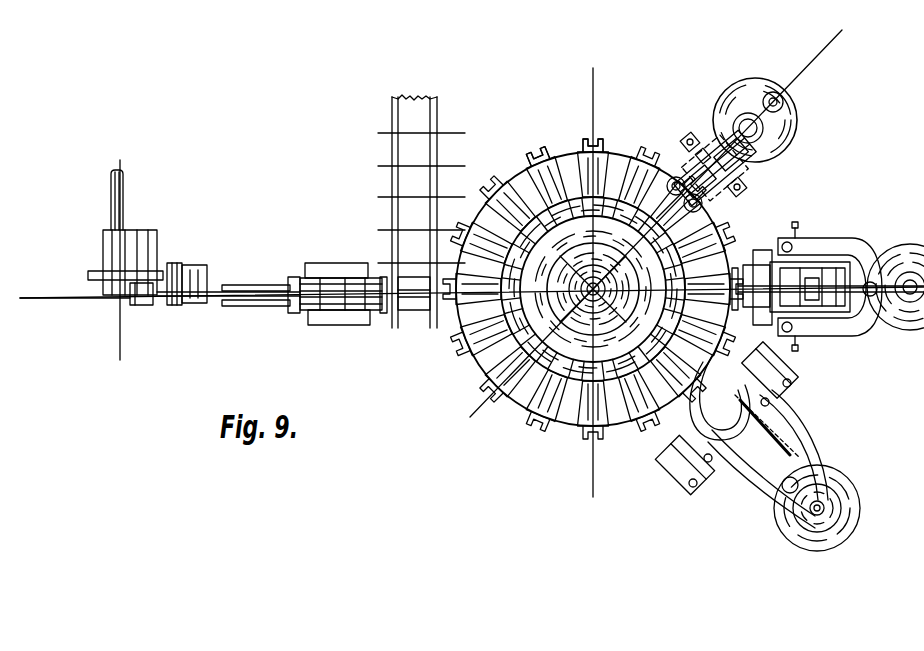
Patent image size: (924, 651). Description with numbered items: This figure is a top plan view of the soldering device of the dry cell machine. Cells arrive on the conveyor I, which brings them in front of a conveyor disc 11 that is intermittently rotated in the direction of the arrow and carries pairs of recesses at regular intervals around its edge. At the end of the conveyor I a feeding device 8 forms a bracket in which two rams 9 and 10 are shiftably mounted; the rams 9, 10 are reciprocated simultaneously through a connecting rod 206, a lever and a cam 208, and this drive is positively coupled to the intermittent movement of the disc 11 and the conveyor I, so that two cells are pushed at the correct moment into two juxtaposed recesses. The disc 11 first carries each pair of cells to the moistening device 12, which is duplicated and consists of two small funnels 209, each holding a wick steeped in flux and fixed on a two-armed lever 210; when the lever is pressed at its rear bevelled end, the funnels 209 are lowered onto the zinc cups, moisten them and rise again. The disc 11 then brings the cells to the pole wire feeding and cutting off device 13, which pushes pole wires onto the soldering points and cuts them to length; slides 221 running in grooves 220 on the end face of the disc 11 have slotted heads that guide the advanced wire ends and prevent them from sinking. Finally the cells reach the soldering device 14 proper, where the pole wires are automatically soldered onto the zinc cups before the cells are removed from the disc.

The feeding device 8 is at (336, 268).
The ram 9 is at (266, 307).
The ram 10 is at (247, 288).
The conveyor disc 11 is at (566, 160).
The moistening device 12 is at (748, 176).
The pole wire feeding and cutting off device 13 is at (856, 236).
The soldering device 14 is at (797, 412).
The connecting rod 206 is at (212, 292).
The cam 208 is at (100, 270).
The funnel 209 is at (675, 177).
The two-armed lever 210 is at (703, 150).
The groove 220 is at (590, 140).
The slide 221 is at (731, 238).
The conveyor I is at (383, 151).